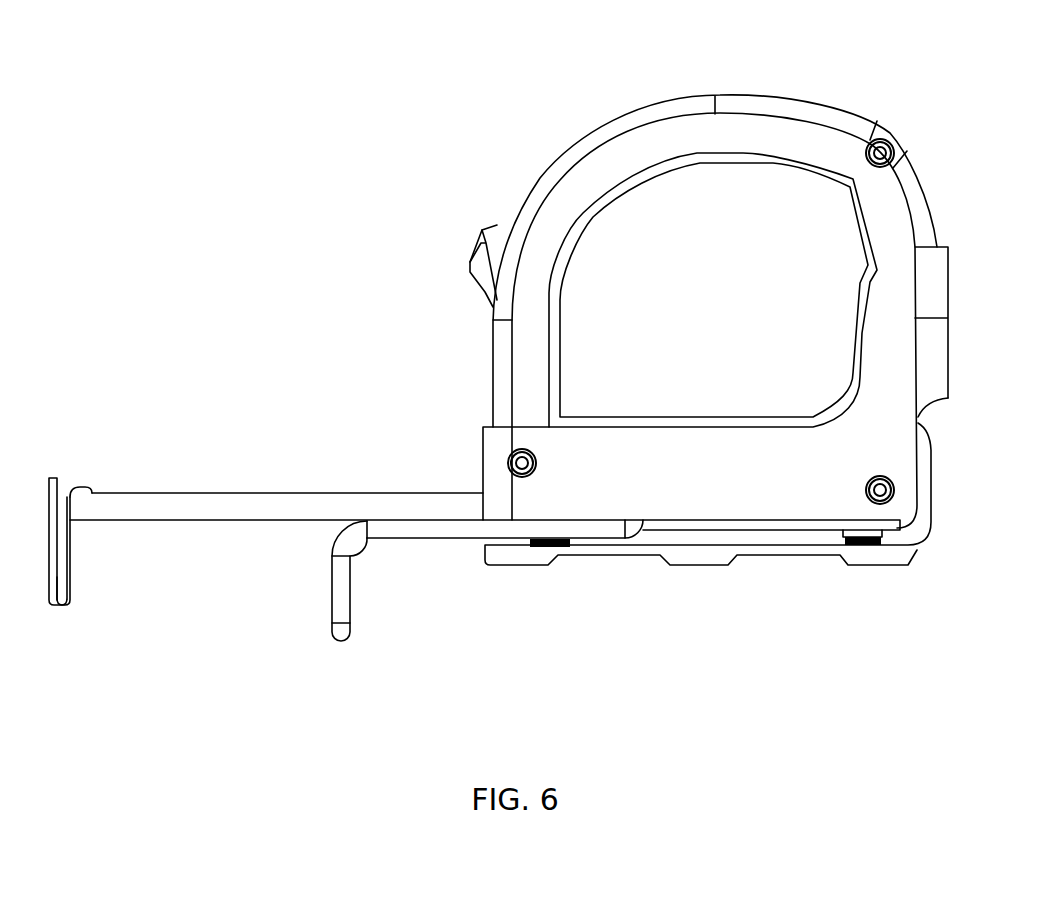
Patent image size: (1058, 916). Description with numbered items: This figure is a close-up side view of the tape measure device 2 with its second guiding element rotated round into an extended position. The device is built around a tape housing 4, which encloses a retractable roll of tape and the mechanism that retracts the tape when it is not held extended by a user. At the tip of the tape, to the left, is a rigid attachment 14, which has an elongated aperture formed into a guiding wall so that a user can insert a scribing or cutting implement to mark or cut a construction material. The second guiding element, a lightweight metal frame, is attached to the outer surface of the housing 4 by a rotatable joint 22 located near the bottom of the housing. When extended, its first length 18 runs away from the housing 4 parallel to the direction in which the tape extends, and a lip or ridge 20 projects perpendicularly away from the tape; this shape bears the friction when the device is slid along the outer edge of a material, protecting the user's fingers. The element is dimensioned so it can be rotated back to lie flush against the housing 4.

The tape measure device 2 is at (498, 363).
The tape housing 4 is at (530, 280).
The rigid attachment 14 is at (58, 523).
The first length 18 is at (525, 525).
The lip or ridge 20 is at (340, 600).
The rotatable joint 22 is at (642, 525).